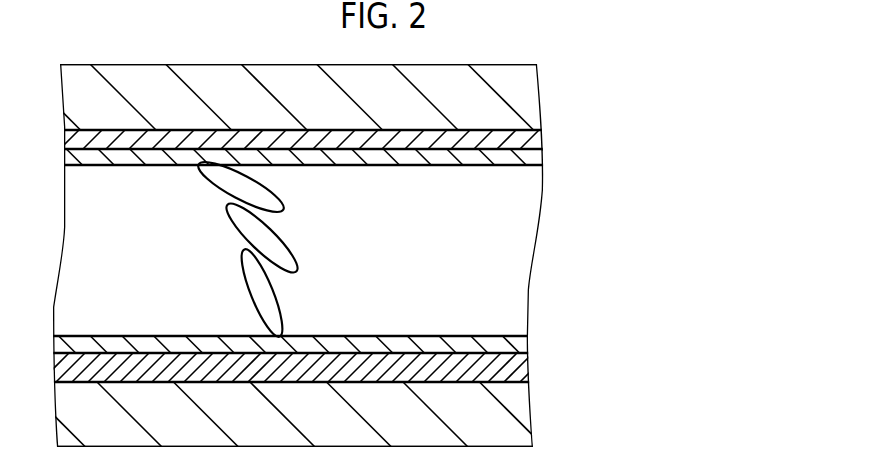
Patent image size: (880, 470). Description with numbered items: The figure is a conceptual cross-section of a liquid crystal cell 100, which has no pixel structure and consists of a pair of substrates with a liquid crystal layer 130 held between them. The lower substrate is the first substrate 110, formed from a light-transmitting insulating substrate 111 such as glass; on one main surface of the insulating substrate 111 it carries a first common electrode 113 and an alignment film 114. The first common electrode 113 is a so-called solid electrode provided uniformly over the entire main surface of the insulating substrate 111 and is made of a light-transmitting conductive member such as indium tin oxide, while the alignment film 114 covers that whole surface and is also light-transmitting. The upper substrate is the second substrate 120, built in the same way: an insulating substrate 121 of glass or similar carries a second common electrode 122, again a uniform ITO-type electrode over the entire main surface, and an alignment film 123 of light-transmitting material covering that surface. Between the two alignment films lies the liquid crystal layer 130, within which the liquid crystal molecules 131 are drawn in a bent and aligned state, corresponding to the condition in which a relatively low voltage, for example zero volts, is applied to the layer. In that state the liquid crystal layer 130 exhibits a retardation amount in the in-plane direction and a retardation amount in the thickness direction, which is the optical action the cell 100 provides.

The liquid crystal cell 100 is at (401, 255).
The first substrate 110 is at (363, 385).
The insulating substrate 111 is at (518, 408).
The first common electrode 113 is at (517, 375).
The alignment film 114 is at (518, 343).
The second substrate 120 is at (359, 124).
The insulating substrate 121 is at (530, 100).
The second common electrode 122 is at (530, 136).
The alignment film 123 is at (530, 156).
The liquid crystal layer 130 is at (338, 247).
The liquid crystal molecules 131 is at (285, 232).